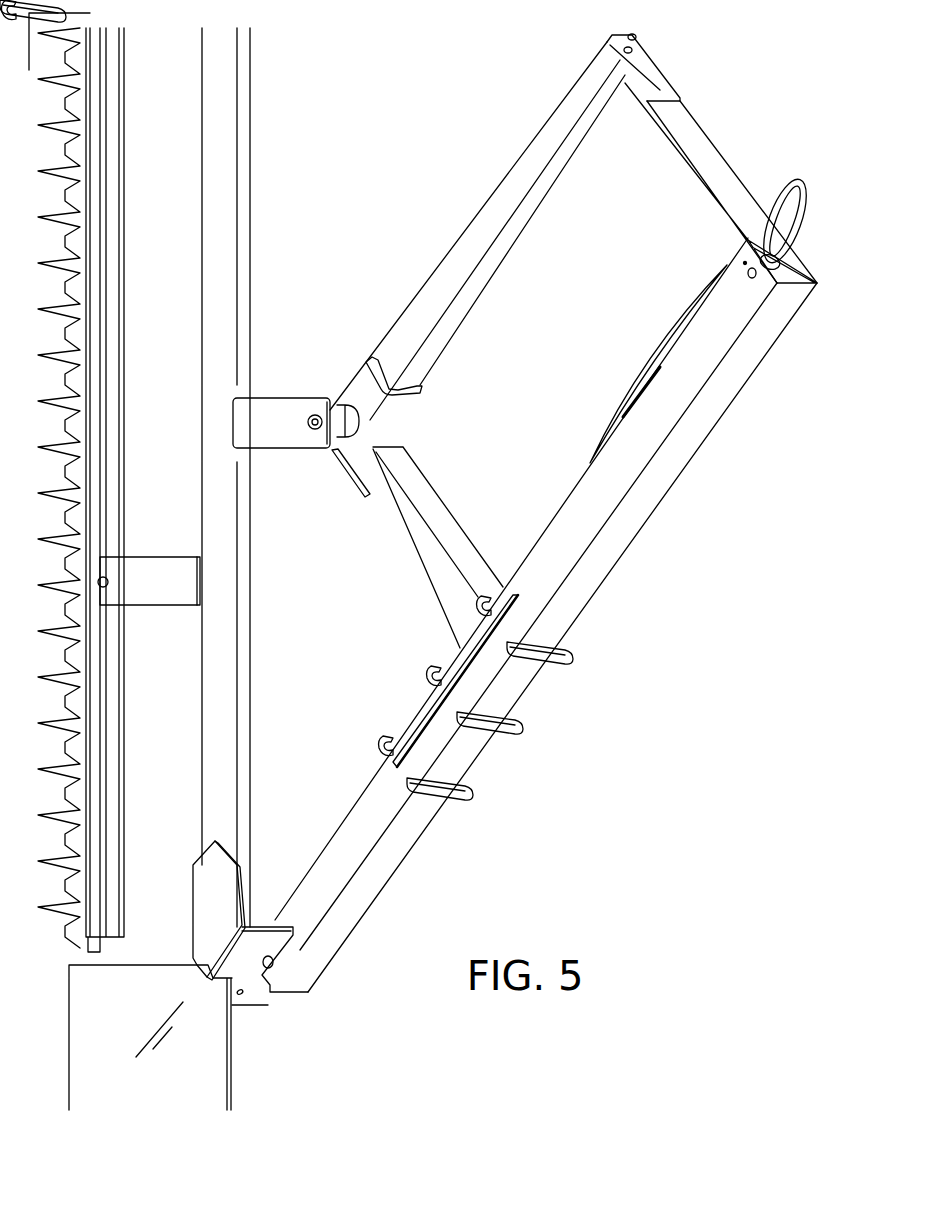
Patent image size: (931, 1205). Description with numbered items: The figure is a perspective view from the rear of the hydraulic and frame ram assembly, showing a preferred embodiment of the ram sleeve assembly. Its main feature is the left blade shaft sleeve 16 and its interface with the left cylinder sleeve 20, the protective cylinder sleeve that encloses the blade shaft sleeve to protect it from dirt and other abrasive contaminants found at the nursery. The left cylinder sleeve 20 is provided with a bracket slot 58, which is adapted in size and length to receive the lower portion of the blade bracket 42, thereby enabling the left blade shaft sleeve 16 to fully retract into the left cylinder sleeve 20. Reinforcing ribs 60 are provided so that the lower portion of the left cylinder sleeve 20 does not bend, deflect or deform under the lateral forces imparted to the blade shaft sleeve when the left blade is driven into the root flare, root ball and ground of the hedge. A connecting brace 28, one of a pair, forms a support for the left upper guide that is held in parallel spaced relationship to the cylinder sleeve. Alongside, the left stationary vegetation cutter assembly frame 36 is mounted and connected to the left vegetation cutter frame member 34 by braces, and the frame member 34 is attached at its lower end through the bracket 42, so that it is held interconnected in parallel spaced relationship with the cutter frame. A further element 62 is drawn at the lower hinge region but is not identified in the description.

The left blade shaft sleeve 16 is at (332, 862).
The left cylinder sleeve 20 is at (573, 497).
The connecting brace 28 is at (165, 565).
The left vegetation cutter frame member 34 is at (212, 470).
The left stationary vegetation cutter assembly frame 36 is at (110, 398).
The bracket 42 is at (208, 903).
The bracket slot 58 is at (412, 733).
The reinforcing ribs 60 is at (570, 717).
The hinge bracket 62 is at (257, 994).